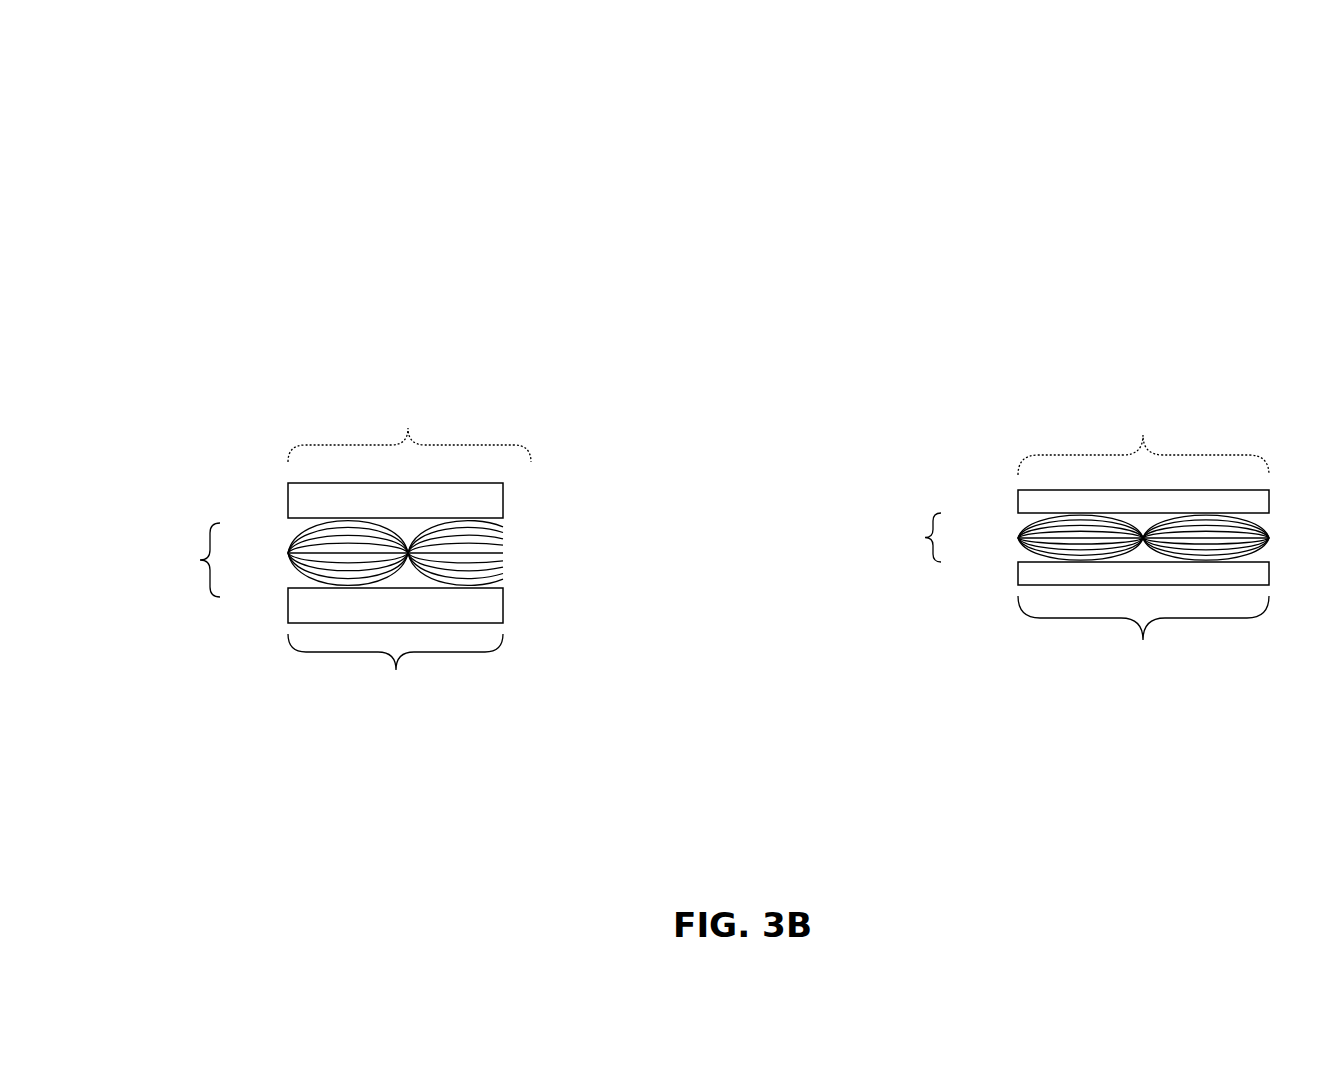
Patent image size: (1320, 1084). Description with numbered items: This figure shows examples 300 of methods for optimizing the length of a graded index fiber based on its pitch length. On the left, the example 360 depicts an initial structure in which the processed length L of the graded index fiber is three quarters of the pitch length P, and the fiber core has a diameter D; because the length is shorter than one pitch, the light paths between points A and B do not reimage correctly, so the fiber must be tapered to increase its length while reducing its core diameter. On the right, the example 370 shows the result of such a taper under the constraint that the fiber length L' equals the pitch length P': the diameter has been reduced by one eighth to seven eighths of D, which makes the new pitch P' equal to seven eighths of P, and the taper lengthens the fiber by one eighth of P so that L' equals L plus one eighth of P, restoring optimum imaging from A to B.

The examples of methods for optimizing a graded index fiber length 300 is at (200, 81).
The example where the processed length of the graded index fiber is three quarters o 360 is at (348, 497).
The example where the diameter is reduced by one eighth through a taper 370 is at (1074, 476).